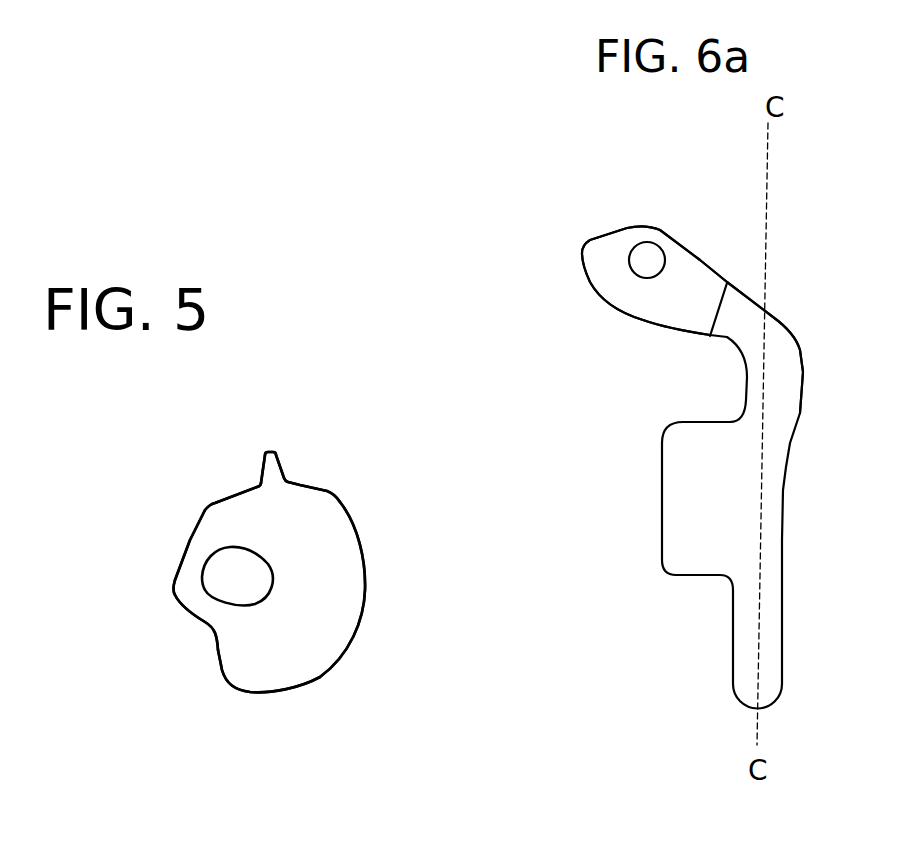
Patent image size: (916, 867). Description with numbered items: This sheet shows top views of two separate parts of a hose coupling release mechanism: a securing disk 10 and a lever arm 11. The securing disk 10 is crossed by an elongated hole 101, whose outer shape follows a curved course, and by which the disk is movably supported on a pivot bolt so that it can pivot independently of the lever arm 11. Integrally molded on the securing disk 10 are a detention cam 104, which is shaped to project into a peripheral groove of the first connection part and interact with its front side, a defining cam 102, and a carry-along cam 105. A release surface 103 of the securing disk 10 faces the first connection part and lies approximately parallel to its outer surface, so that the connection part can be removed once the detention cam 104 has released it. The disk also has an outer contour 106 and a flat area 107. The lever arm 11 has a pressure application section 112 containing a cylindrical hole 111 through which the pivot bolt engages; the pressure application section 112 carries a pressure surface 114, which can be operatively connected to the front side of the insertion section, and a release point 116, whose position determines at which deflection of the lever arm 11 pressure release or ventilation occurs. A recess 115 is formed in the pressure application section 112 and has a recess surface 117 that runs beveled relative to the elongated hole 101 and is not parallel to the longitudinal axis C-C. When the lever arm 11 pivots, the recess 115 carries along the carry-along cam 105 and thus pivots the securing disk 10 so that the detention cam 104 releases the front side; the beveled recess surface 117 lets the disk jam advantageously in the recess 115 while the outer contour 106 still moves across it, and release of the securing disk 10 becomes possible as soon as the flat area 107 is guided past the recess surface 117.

In FIG. 5, the securing disk 10 is at (335, 595).
In FIG. 5, the elongated hole 101 is at (230, 578).
In FIG. 5, the defining cam 102 is at (225, 680).
In FIG. 5, the release surface 103 is at (187, 540).
In FIG. 5, the detention cam 104 is at (177, 595).
In FIG. 5, the carry-along cam 105 is at (280, 473).
In FIG. 5, the outer contour 106 is at (368, 580).
In FIG. 5, the flat area 107 is at (310, 482).
In FIG. 6a, the lever arm 11 is at (750, 538).
In FIG. 6a, the cylindrical hole 111 is at (647, 252).
In FIG. 6a, the pressure application section 112 is at (707, 208).
In FIG. 6a, the pressure surface 114 is at (601, 306).
In FIG. 6a, the recess 115 is at (723, 263).
In FIG. 6a, the release point 116 is at (577, 247).
In FIG. 6a, the recess surface 117 is at (719, 296).